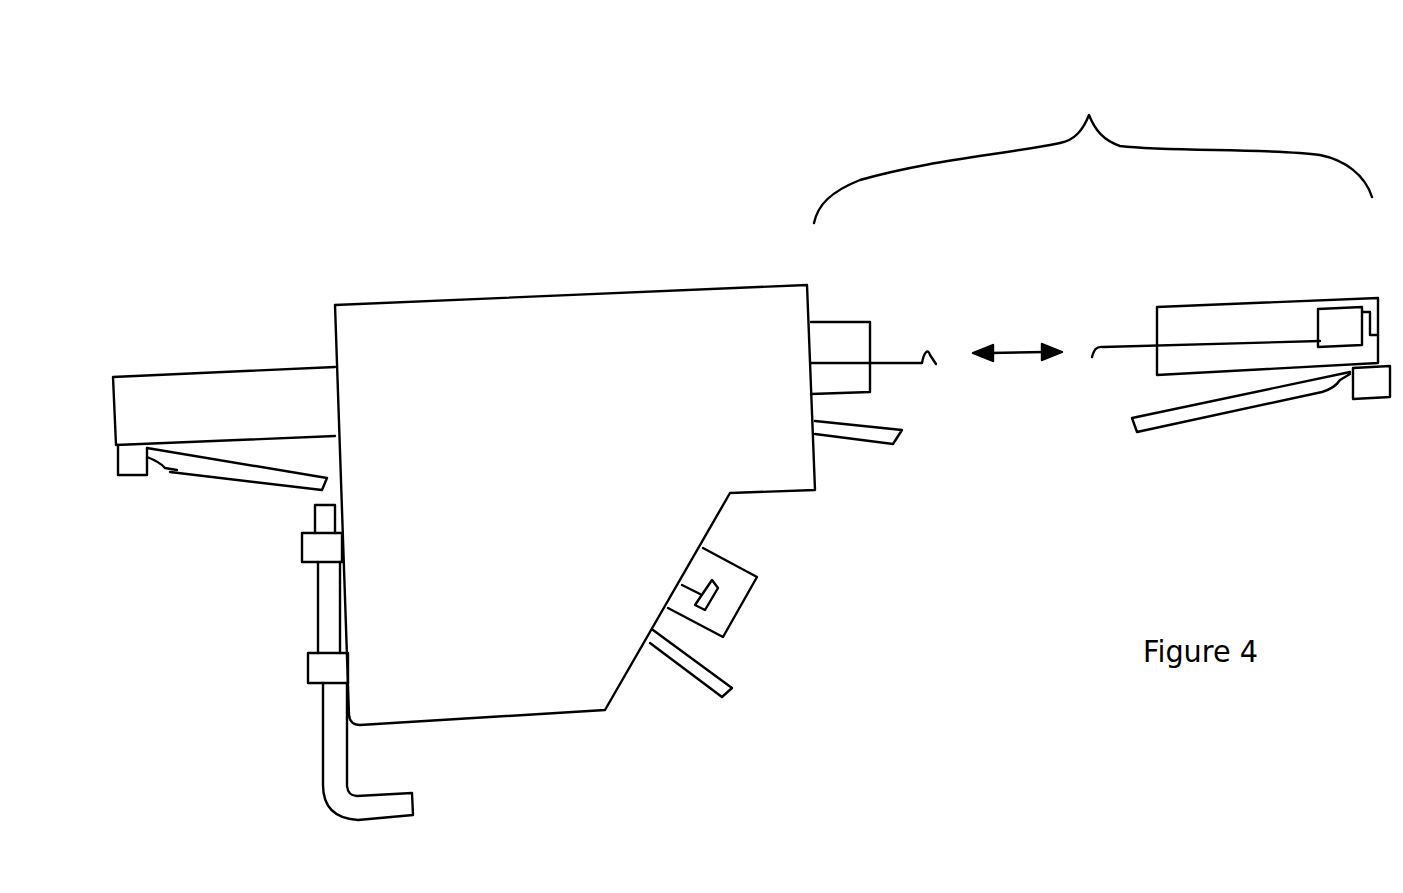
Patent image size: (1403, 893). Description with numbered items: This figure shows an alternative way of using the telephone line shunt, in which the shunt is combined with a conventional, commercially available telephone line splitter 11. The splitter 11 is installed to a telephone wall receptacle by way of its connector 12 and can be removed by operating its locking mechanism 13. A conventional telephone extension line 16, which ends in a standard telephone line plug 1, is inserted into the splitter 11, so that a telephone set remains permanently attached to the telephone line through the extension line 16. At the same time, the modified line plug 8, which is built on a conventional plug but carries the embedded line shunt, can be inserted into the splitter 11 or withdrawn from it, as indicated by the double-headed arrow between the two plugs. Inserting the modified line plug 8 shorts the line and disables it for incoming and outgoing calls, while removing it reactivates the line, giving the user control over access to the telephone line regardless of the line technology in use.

The telephone line plug 1 is at (863, 340).
The modified line plug 8 is at (738, 597).
The telephone line splitter 11 is at (527, 328).
The connector 12 is at (272, 388).
The locking mechanism 13 is at (337, 792).
The telephone extension line 16 is at (1093, 147).